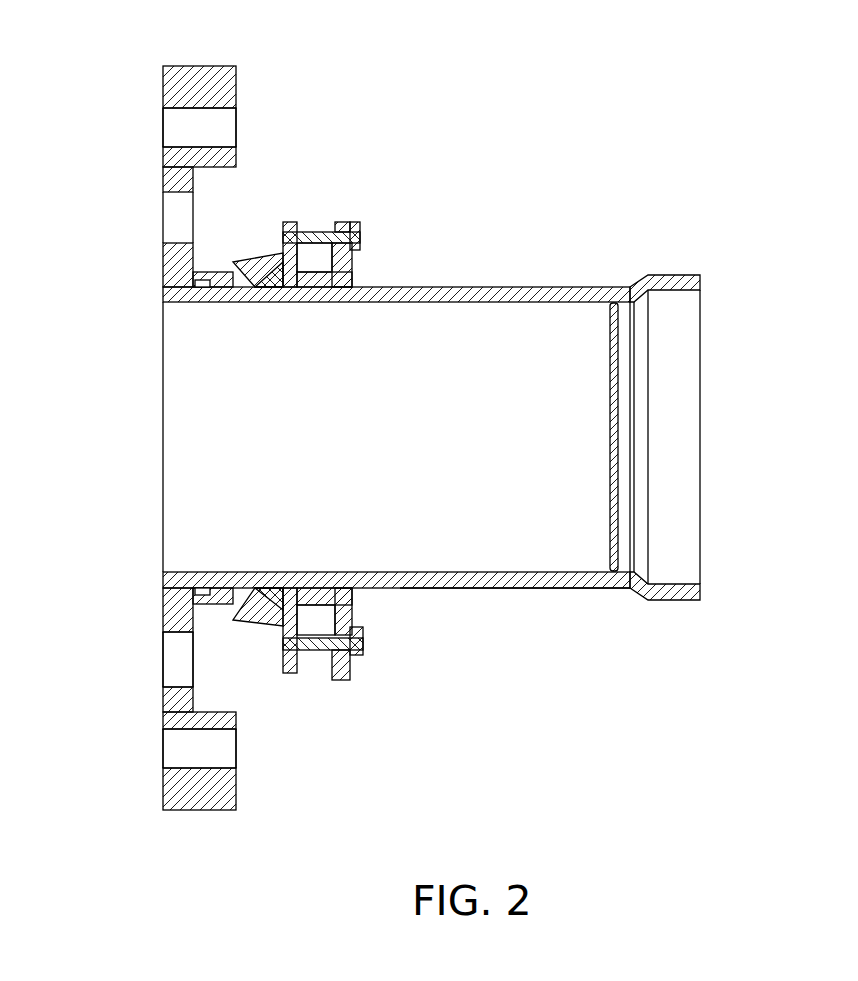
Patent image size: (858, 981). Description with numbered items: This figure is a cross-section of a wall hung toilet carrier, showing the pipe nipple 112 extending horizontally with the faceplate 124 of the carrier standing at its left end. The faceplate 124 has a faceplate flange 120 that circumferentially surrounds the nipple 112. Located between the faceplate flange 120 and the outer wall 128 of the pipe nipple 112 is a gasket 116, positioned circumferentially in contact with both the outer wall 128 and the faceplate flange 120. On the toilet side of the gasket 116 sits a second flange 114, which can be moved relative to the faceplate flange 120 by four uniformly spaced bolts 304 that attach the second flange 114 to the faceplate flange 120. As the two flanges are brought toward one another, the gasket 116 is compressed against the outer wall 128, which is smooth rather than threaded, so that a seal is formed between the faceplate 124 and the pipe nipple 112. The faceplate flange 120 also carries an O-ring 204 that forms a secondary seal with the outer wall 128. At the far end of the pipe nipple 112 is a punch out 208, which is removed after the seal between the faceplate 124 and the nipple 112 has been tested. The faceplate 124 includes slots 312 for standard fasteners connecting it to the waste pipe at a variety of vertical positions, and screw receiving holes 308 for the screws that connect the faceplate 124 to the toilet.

The pipe nipple 112 is at (700, 427).
The second flange 114 is at (355, 265).
The gasket 116 is at (300, 232).
The faceplate flange 120 is at (270, 253).
The faceplate 124 is at (237, 790).
The outer wall 128 is at (545, 590).
The O-ring 204 is at (210, 278).
The punch out 208 is at (618, 385).
The bolts 304 is at (360, 232).
The screw receiving holes 308 is at (225, 125).
The slots 312 is at (170, 660).